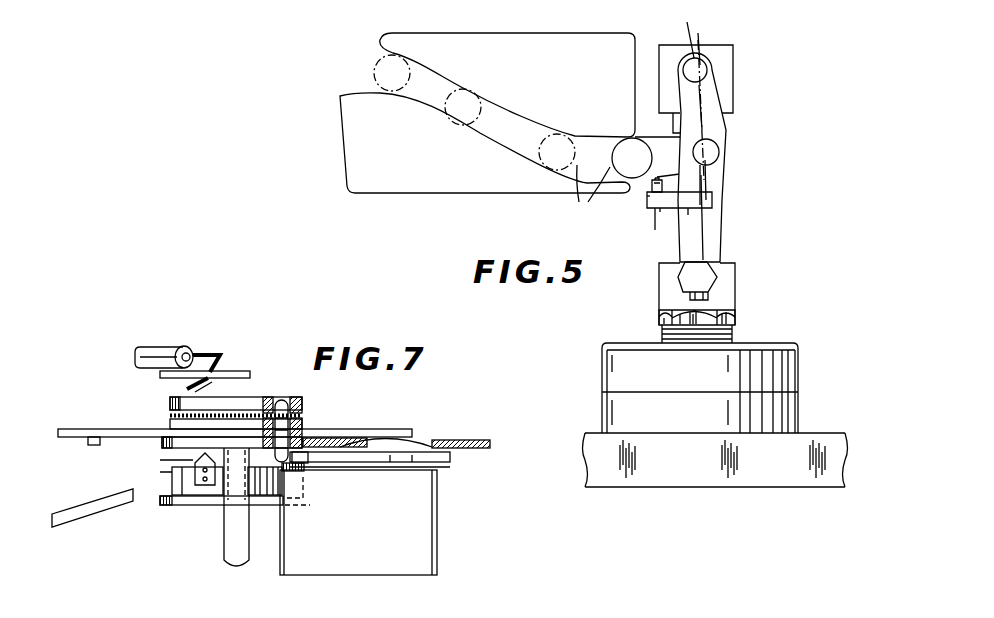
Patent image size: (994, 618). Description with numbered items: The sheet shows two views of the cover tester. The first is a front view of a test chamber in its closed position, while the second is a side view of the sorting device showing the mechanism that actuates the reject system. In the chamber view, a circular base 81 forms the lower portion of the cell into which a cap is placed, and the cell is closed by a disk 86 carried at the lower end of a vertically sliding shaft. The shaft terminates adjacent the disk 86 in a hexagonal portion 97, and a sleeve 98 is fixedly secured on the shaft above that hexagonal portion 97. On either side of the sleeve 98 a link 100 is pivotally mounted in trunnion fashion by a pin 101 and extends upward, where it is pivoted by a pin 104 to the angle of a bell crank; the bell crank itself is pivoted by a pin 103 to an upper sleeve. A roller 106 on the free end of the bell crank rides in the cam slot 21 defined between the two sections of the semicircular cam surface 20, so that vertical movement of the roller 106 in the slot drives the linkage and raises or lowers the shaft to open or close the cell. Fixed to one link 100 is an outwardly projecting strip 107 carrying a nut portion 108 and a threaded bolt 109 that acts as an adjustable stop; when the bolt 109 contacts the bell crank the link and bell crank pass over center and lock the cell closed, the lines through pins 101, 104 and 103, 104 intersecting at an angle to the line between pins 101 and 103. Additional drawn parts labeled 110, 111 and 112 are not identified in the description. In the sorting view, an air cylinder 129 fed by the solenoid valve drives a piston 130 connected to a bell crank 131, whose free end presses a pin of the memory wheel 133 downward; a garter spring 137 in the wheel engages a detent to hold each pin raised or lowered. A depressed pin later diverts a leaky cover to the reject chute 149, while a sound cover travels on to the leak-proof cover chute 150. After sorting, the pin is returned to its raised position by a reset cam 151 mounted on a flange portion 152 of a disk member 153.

In FIG. 5, the cam surface 20 is at (360, 168).
In FIG. 5, the cam slot 21 is at (506, 110).
In FIG. 5, the circular base 81 is at (797, 420).
In FIG. 5, the disk 86 is at (773, 345).
In FIG. 5, the hexagonal portion 97 is at (731, 318).
In FIG. 5, the sleeve 98 is at (727, 278).
In FIG. 5, the link 100 is at (722, 243).
In FIG. 5, the pin 101 is at (703, 276).
In FIG. 5, the pin 103 is at (704, 68).
In FIG. 5, the pin 104 is at (712, 150).
In FIG. 5, the roller 106 is at (492, 138).
In FIG. 5, the strip 107 is at (663, 209).
In FIG. 5, the nut portion 108 is at (656, 209).
In FIG. 5, the threaded bolt 109 is at (650, 181).
In FIG. 5, the support block 110 is at (705, 111).
In FIG. 5, the slot 111 is at (703, 188).
In FIG. 5, the stop plate 112 is at (712, 197).
In FIG. 7, the air cylinder 129 is at (166, 346).
In FIG. 7, the piston 130 is at (203, 349).
In FIG. 7, the bell crank 131 is at (228, 362).
In FIG. 7, the memory wheel 133 is at (257, 397).
In FIG. 7, the garter spring 137 is at (302, 413).
In FIG. 7, the reject chute 149 is at (428, 533).
In FIG. 7, the leak-proof cover chute 150 is at (102, 502).
In FIG. 7, the reset cam 151 is at (196, 463).
In FIG. 7, the flange portion 152 is at (172, 474).
In FIG. 7, the disk member 153 is at (161, 502).